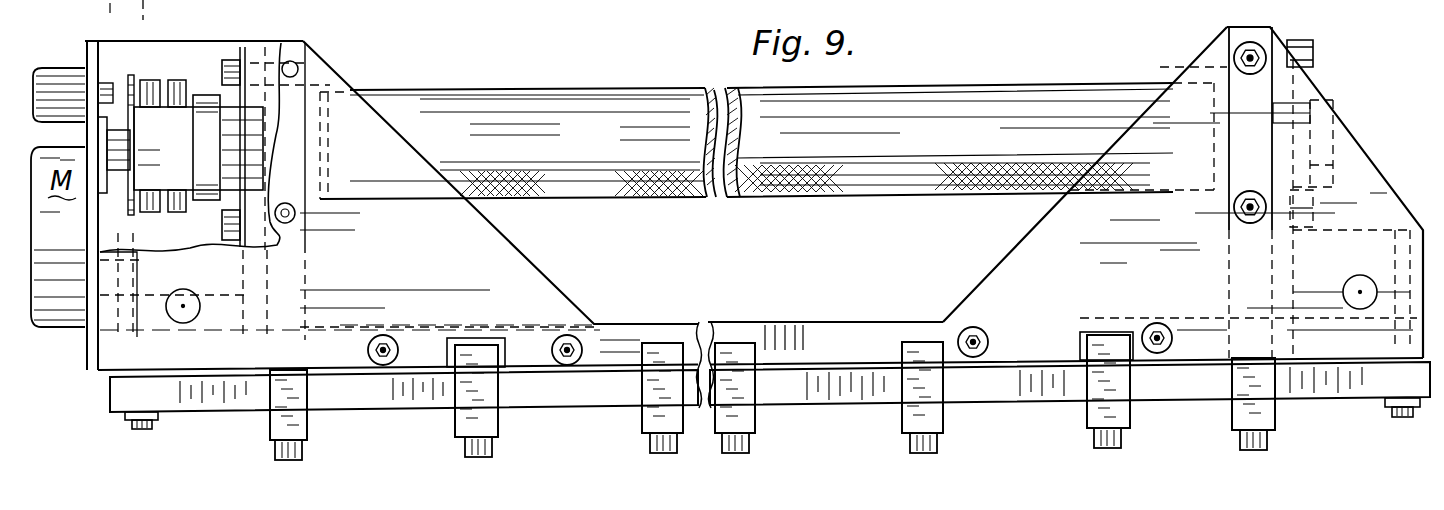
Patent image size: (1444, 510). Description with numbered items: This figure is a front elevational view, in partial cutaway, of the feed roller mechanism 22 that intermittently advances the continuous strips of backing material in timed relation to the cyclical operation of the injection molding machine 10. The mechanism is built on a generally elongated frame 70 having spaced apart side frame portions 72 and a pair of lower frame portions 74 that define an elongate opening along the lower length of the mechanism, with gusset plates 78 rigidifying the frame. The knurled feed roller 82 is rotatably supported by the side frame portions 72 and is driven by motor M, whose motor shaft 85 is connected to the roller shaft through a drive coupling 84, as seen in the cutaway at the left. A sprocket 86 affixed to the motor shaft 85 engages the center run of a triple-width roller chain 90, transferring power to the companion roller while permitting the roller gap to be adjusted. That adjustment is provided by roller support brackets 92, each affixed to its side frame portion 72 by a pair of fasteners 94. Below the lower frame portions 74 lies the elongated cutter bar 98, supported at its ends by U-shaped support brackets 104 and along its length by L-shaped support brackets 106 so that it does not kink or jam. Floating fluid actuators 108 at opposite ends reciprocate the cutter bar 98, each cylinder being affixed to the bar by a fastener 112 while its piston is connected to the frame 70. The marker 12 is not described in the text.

The injection molding machine 10 is at (110, 8).
The section line 12 is at (178, 10).
The feed roller mechanism 22 is at (1350, 112).
The frame 70 is at (1360, 152).
The side frame portions 72 is at (281, 50).
The lower frame portions 74 is at (800, 332).
The gusset plates 78 is at (533, 267).
The feed roller 82 is at (462, 108).
The drive coupling 84 is at (210, 152).
The motor shaft 85 is at (118, 146).
The sprocket 86 is at (173, 98).
The triple-width roller chain 90 is at (153, 84).
The roller support brackets 92 is at (250, 55).
The fasteners 94 is at (230, 60).
The cutter bar 98 is at (375, 400).
The U-shaped support brackets 104 is at (268, 420).
The L-shaped support brackets 106 is at (648, 418).
The fluid actuators 108 is at (121, 343).
The fastener 112 is at (135, 422).